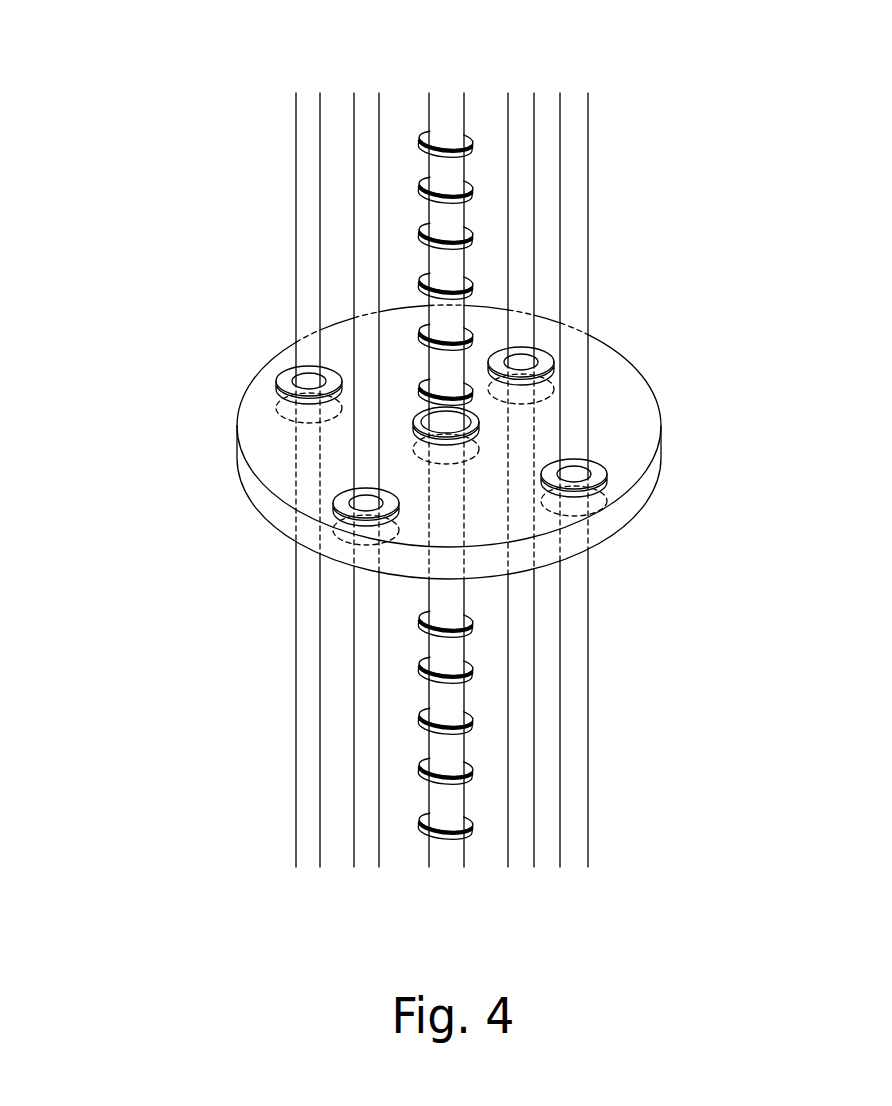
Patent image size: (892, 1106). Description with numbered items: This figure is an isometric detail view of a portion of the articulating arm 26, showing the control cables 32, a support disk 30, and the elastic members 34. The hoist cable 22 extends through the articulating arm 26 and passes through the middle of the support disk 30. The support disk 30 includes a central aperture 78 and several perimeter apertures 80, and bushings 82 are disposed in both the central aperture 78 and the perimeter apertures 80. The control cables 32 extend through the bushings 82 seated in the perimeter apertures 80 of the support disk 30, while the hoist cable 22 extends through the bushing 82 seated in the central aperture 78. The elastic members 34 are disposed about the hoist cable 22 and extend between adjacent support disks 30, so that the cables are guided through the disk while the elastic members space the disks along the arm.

The hoist cable 22 is at (452, 215).
The articulating arm 26 is at (170, 347).
The support disk 30 is at (620, 475).
The control cables 32 is at (310, 163).
The elastic members 34 is at (470, 142).
The central aperture 78 is at (478, 428).
The perimeter apertures 80 is at (570, 477).
The bushings 82 is at (348, 501).